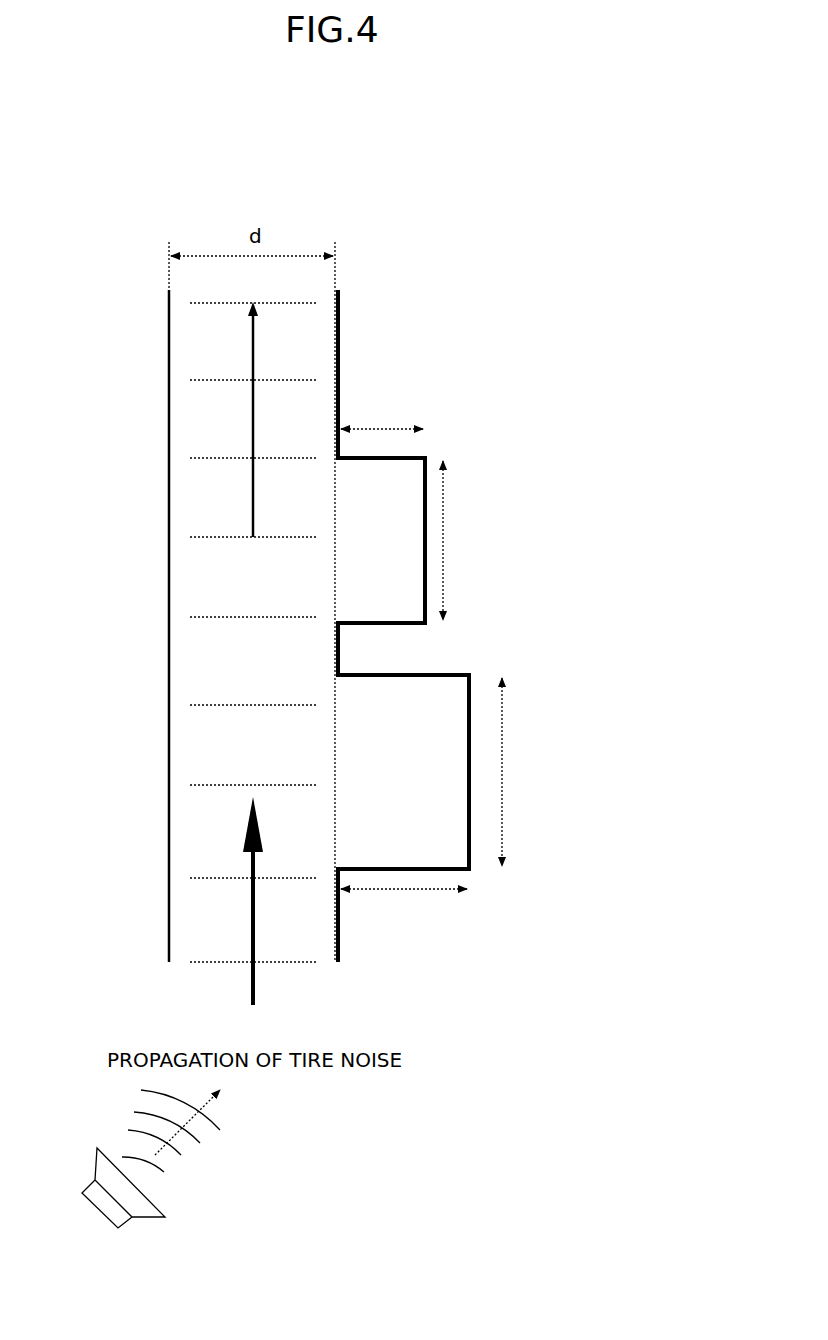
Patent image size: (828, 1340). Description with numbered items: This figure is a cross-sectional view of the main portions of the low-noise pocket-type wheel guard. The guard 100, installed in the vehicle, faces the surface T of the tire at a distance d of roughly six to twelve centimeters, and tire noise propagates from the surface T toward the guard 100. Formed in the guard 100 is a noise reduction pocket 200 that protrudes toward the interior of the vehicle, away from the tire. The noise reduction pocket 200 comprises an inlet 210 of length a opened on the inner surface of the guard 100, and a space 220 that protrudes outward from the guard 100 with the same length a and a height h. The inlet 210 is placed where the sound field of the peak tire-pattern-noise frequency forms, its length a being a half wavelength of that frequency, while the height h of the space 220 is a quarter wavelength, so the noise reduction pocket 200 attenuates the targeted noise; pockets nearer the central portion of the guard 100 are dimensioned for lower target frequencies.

The guard 100 is at (340, 338).
The noise reduction pocket 200 is at (514, 663).
The inlet 210 is at (398, 574).
The space 220 is at (408, 742).
The surface of the tire T is at (169, 504).